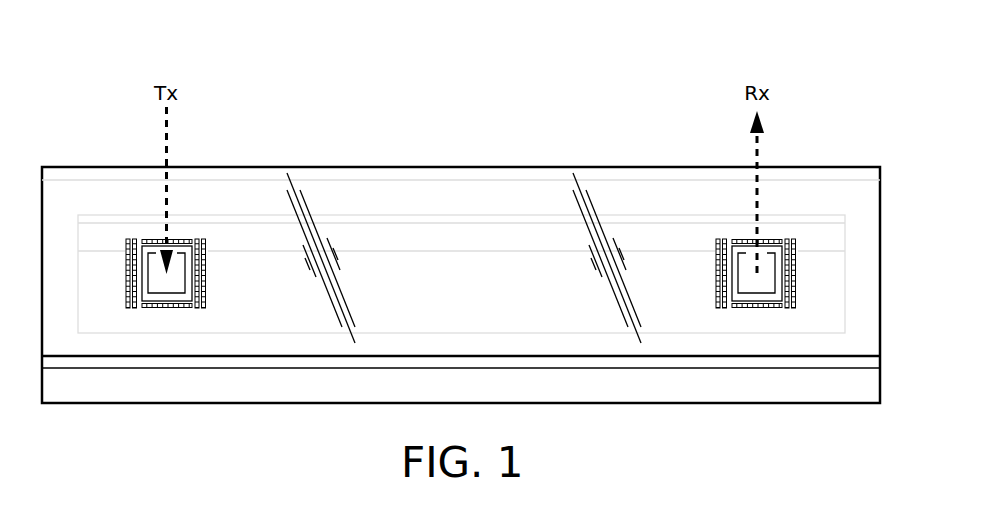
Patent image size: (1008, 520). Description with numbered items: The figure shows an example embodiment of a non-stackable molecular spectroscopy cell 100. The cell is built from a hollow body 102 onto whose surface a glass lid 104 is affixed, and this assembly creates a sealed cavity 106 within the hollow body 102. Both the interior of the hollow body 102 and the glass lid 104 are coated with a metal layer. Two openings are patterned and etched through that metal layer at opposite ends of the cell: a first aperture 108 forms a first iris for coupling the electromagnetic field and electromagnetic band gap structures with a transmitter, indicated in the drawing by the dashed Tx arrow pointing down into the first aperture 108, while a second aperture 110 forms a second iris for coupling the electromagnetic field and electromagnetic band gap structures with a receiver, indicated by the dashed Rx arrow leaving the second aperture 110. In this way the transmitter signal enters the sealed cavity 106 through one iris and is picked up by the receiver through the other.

The non-stackable molecular spectroscopy cell 100 is at (352, 63).
The hollow body 102 is at (272, 395).
The glass lid 104 is at (352, 172).
The sealed cavity 106 is at (505, 263).
The first aperture 108 is at (187, 286).
The second aperture 110 is at (735, 283).